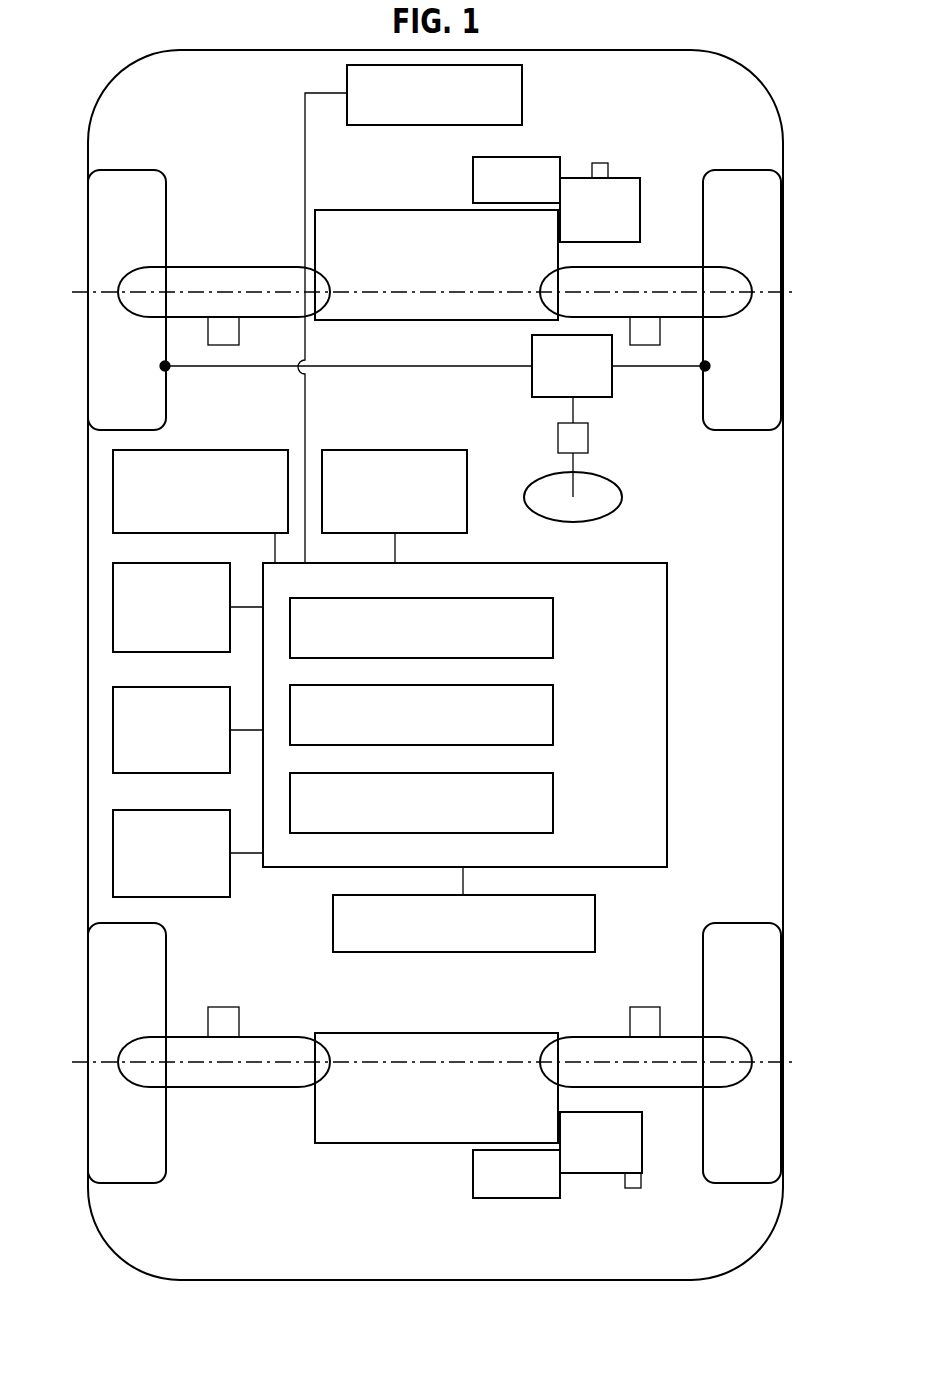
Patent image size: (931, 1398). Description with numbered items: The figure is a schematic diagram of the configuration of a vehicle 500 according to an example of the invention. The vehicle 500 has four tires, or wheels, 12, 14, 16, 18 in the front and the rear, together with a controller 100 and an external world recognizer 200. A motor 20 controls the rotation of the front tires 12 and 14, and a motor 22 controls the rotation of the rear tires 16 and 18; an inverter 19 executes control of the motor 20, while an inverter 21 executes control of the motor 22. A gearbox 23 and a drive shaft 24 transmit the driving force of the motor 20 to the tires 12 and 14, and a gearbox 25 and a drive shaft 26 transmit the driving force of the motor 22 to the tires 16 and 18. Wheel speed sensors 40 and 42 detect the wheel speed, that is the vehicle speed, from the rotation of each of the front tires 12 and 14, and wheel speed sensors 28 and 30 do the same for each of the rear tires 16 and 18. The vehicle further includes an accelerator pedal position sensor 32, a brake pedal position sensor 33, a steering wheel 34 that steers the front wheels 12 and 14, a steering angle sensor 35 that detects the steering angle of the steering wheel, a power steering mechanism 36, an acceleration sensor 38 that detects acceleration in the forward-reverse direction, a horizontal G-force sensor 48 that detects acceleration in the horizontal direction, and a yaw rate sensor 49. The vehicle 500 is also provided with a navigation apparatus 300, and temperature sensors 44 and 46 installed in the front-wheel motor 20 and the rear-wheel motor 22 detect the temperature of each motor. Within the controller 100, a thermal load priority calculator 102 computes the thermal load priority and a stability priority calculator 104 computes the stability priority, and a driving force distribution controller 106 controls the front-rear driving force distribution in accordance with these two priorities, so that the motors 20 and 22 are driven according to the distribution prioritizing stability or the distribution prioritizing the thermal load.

The front tire 12 is at (100, 232).
The front tire 14 is at (772, 230).
The rear tire 16 is at (100, 1135).
The rear tire 18 is at (772, 1114).
The inverter 19 is at (542, 157).
The motor 20 is at (630, 178).
The inverter 21 is at (520, 1198).
The motor 22 is at (587, 1173).
The gearbox 23 is at (432, 210).
The drive shaft 24 is at (222, 267).
The gearbox 25 is at (432, 1033).
The drive shaft 26 is at (225, 1087).
The wheel speed sensor 28 is at (222, 1007).
The wheel speed sensor 30 is at (643, 1007).
The accelerator pedal position sensor 32 is at (393, 448).
The brake pedal position sensor 33 is at (212, 448).
The steering wheel 34 is at (622, 497).
The steering angle sensor 35 is at (588, 438).
The power steering mechanism 36 is at (612, 385).
The acceleration sensor 38 is at (152, 563).
The wheel speed sensor 40 is at (208, 330).
The wheel speed sensor 42 is at (660, 330).
The temperature sensor 44 is at (600, 163).
The temperature sensor 46 is at (633, 1188).
The horizontal G-force sensor 48 is at (152, 687).
The yaw rate sensor 49 is at (152, 810).
The controller 100 is at (510, 715).
The thermal load priority calculator 102 is at (553, 628).
The stability priority calculator 104 is at (553, 715).
The driving force distribution controller 106 is at (553, 800).
The external world recognizer 200 is at (522, 78).
The navigation apparatus 300 is at (595, 920).
The vehicle 500 is at (647, 1349).